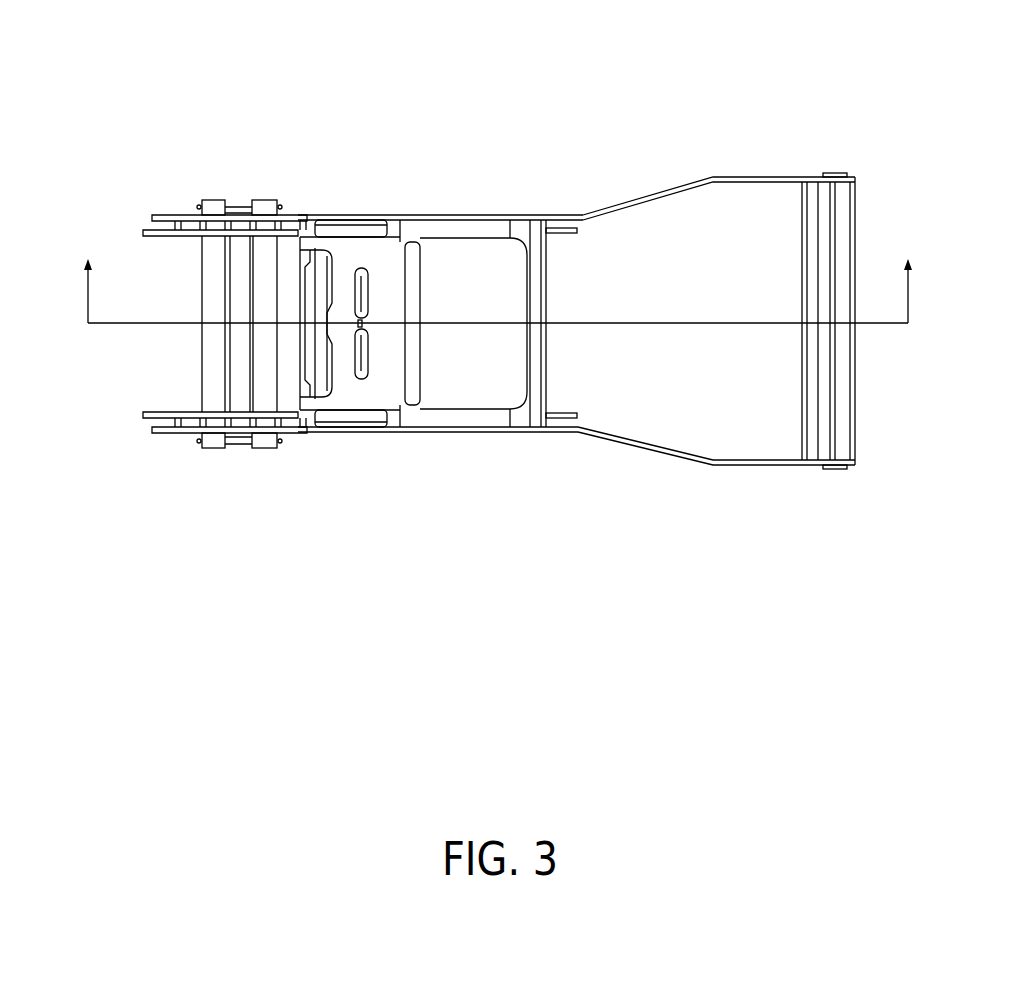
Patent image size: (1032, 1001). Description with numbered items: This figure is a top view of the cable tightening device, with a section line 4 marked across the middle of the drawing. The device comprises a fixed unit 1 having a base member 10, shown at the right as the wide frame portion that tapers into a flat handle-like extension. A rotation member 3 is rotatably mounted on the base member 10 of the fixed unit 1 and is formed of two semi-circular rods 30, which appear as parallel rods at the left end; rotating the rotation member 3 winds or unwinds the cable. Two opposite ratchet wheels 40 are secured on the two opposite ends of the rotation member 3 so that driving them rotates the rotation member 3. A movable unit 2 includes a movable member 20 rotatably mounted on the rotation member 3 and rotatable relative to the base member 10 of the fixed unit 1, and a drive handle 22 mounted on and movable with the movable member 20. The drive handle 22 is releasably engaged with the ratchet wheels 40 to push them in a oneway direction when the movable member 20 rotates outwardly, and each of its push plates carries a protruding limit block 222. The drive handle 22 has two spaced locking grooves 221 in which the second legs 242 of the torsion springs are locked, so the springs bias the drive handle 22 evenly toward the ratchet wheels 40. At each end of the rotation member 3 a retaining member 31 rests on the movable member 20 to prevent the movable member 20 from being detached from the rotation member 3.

The fixed unit 1 is at (590, 364).
The base member 10 is at (571, 419).
The movable unit 2 is at (746, 156).
The movable member 20 is at (843, 233).
The drive handle 22 is at (393, 318).
The locking grooves 221 is at (353, 278).
The limit block 222 is at (372, 227).
The second leg 242 is at (362, 318).
The rotation member 3 is at (217, 470).
The semi-circular rods 30 is at (207, 448).
The retaining member 31 is at (235, 448).
The ratchet wheels 40 is at (177, 225).
The section line 4- 4 is at (497, 277).